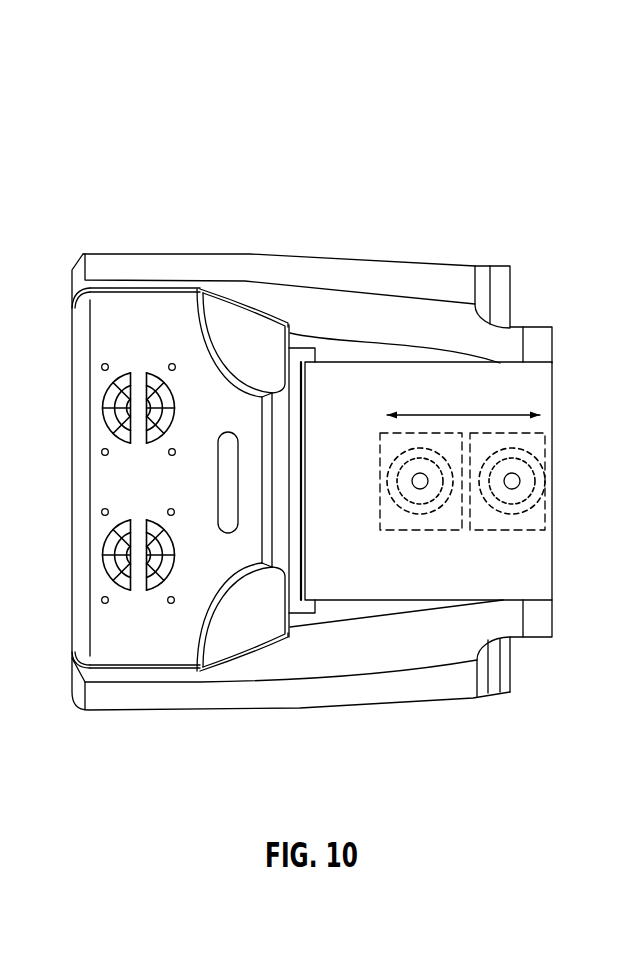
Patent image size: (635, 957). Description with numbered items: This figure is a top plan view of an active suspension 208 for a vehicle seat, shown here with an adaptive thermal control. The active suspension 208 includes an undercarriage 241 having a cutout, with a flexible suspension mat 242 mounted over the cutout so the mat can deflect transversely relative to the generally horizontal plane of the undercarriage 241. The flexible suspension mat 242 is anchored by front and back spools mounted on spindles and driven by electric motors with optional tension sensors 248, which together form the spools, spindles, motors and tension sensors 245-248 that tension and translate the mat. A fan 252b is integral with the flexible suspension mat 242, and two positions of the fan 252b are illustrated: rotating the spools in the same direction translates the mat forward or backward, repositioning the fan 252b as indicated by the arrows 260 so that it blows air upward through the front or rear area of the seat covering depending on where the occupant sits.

The active suspension 208 is at (392, 92).
The undercarriage 241 is at (213, 743).
The flexible suspension mat 242 is at (548, 388).
The spools, spindles, electric motors and tension sensors 245-248 is at (310, 352).
The tension sensors 248 is at (193, 268).
The fan 252b is at (538, 470).
The arrows 260 is at (480, 415).